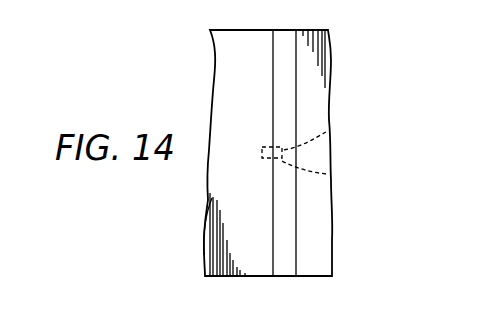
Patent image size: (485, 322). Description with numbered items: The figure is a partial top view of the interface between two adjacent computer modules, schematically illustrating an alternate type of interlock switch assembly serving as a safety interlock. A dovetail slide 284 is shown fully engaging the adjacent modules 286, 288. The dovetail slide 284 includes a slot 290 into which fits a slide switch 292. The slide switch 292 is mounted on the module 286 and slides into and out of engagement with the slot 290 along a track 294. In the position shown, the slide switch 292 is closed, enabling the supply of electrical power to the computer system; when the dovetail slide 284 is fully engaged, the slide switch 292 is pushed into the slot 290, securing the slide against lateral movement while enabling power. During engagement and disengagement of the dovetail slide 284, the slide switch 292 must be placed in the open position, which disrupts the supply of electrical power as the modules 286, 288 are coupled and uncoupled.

The dovetail slide 284 is at (292, 263).
The module 286 is at (205, 232).
The module 288 is at (320, 243).
The slot 290 is at (326, 132).
The slide switch 292 is at (326, 174).
The track 294 is at (262, 149).